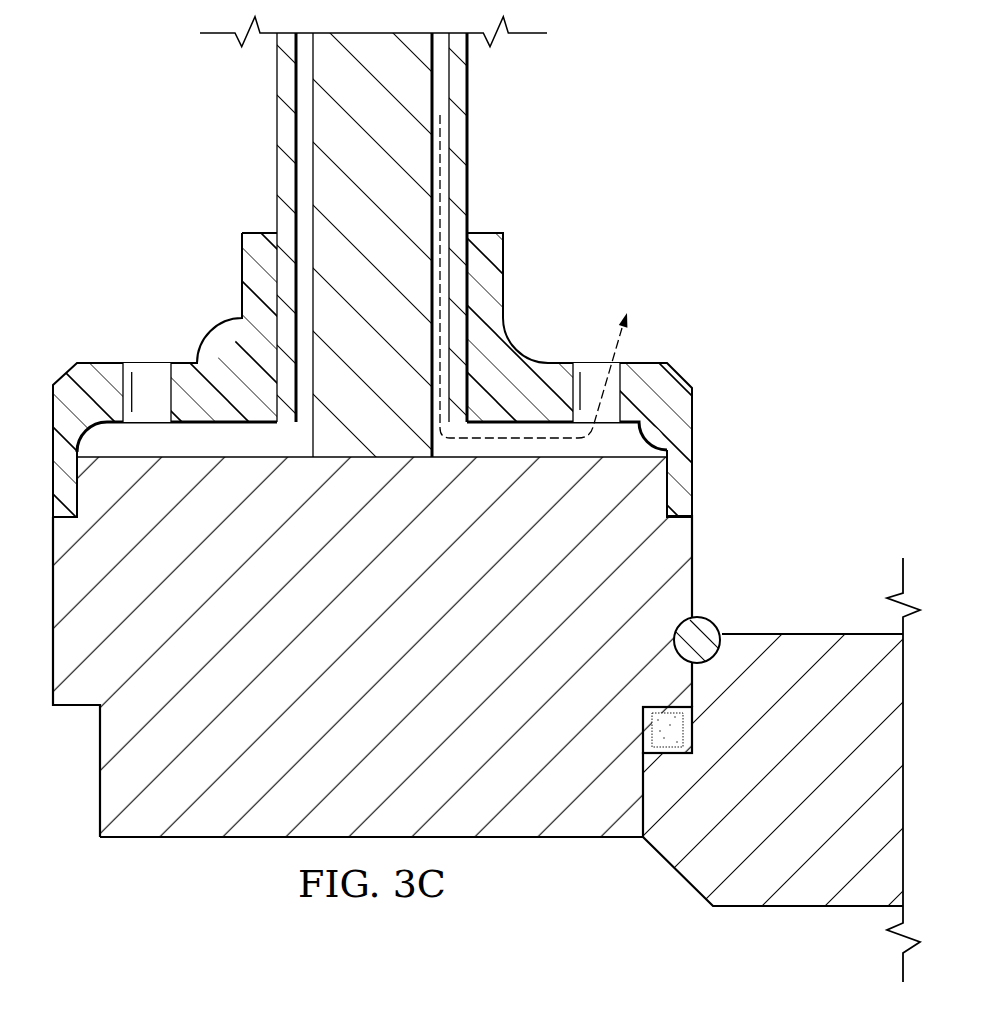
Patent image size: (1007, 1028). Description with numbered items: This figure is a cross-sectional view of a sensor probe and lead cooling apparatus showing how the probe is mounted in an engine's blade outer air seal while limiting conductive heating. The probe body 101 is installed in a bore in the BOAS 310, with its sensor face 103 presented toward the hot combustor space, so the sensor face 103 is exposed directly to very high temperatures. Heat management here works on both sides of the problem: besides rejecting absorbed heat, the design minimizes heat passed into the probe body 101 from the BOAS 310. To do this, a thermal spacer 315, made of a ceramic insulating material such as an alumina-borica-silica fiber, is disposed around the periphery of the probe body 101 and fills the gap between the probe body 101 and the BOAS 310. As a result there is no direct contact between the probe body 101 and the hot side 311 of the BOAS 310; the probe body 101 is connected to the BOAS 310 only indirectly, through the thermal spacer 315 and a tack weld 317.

The probe body 101 is at (348, 637).
The sensor face 103 is at (185, 852).
The BOAS 310 is at (808, 620).
The hot side of BOAS 311 is at (710, 914).
The thermal spacer 315 is at (678, 725).
The tack weld 317 is at (708, 627).